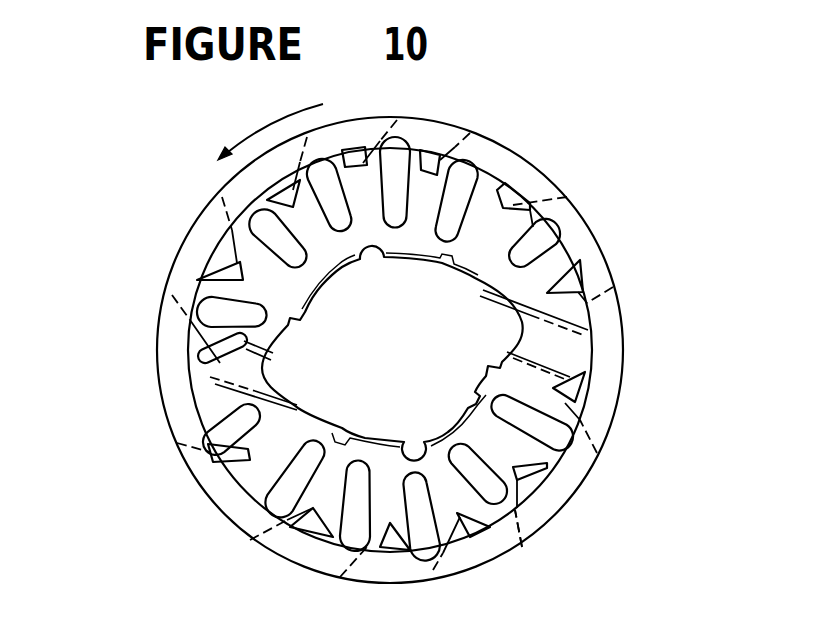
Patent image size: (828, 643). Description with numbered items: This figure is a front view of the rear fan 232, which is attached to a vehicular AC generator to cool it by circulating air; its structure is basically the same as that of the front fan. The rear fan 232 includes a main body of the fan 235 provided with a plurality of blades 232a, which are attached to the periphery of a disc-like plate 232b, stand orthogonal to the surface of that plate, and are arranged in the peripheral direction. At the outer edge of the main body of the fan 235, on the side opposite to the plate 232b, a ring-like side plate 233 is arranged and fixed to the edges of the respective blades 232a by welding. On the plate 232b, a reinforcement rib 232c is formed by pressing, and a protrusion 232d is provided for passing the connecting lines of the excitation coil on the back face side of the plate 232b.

The rear fan 232 is at (215, 180).
The blades 232a is at (540, 197).
The disc-like plate 232b is at (468, 253).
The reinforcement rib 232c is at (577, 480).
The protrusion 232d is at (560, 352).
The ring-like side plate 233 is at (178, 412).
The main body of the fan 235 is at (565, 272).